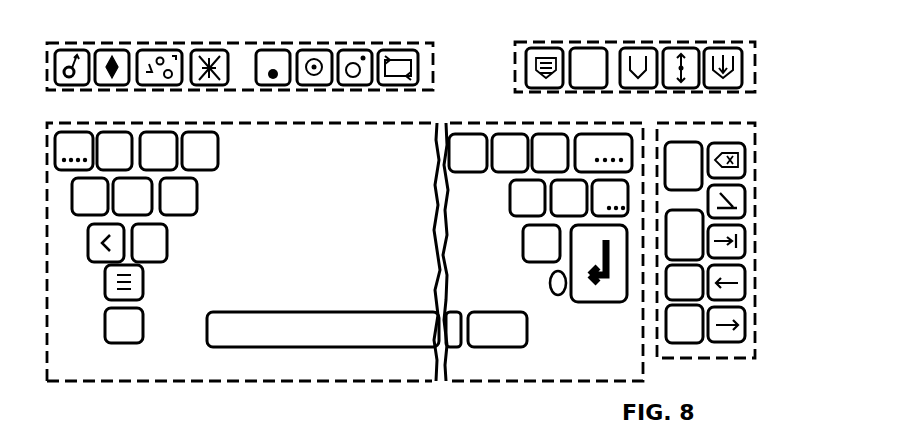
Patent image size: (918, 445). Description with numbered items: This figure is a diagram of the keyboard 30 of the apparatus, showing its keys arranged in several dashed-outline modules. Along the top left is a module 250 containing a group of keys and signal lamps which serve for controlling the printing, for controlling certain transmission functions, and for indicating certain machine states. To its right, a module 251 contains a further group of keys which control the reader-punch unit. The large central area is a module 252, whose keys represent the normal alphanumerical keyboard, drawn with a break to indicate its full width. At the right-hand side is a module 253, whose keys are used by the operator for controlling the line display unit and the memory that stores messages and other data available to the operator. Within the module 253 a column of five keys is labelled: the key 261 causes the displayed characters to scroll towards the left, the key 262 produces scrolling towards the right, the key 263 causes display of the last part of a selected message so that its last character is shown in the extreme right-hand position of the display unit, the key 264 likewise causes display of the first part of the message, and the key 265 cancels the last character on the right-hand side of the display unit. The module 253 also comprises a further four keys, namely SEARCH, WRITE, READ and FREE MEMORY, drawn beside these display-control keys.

The keyboard 30 is at (391, 394).
The module 250 is at (375, 45).
The module 251 is at (660, 45).
The module 252 is at (204, 370).
The module 253 is at (729, 258).
The key 261 is at (745, 325).
The key 262 is at (745, 284).
The key 263 is at (745, 246).
The key 264 is at (745, 205).
The key 265 is at (745, 168).